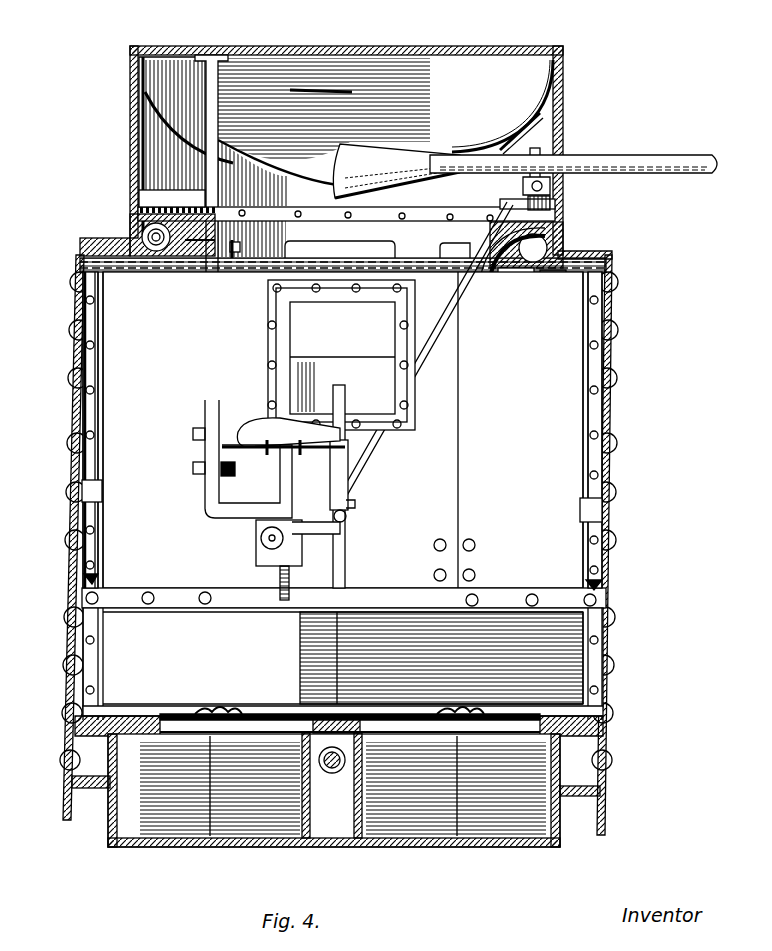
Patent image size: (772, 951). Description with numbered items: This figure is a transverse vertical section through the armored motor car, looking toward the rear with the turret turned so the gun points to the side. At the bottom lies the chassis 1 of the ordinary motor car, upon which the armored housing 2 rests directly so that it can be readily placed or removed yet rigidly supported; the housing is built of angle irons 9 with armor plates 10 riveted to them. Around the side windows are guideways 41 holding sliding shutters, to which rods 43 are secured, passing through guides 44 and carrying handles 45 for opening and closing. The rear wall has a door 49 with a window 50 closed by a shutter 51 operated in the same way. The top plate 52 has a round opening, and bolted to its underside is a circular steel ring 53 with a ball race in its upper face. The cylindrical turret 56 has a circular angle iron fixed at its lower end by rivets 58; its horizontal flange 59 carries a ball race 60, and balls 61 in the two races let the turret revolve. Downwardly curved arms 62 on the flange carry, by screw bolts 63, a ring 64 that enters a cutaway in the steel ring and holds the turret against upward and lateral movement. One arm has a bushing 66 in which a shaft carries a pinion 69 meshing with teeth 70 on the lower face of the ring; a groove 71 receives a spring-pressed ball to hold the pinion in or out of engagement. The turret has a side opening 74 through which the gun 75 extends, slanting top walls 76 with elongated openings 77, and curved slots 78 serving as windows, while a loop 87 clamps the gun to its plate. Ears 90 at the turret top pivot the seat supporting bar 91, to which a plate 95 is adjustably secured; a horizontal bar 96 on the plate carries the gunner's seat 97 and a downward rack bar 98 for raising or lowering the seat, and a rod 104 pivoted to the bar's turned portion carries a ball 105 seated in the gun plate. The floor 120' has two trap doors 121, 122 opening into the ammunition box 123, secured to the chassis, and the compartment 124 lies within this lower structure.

The chassis 1 is at (97, 784).
The armored housing 2 is at (70, 535).
The angle irons 9 is at (614, 262).
The armor plates 10 is at (614, 380).
The guideways 41 is at (104, 335).
The rods 43 is at (104, 378).
The guides 44 is at (104, 486).
The handles 45 is at (98, 577).
The door 49 is at (344, 440).
The window 50 is at (341, 355).
The shutter 51 is at (342, 384).
The top plate 52 is at (140, 242).
The circular steel ring 53 is at (84, 290).
The turret 56 is at (466, 56).
The rivets 58 is at (140, 208).
The horizontal flange 59 is at (140, 186).
The ball race 60 is at (140, 216).
The balls 61 is at (160, 262).
The downwardly curved arms 62 is at (556, 206).
The screw bolts 63 is at (195, 262).
The ring 64 is at (440, 288).
The bushing 66 is at (506, 305).
The pinion 69 is at (552, 302).
The teeth 70 is at (258, 275).
The groove 71 is at (526, 300).
The opening 74 is at (560, 150).
The gun 75 is at (598, 158).
The slanting walls 76 is at (505, 92).
The elongated openings 77 is at (415, 93).
The curved slots 78 is at (560, 110).
The loop 87 is at (538, 160).
The ears 90 is at (225, 55).
The seat supporting bar 91 is at (160, 97).
The plate 95 is at (210, 470).
The horizontal bar 96 is at (258, 450).
The seat 97 is at (245, 422).
The rack bar 98 is at (282, 568).
The rod 104 is at (475, 237).
The ball 105 is at (540, 205).
The floor 120' is at (339, 699).
The trap door 121 is at (185, 714).
The trap door 122 is at (433, 712).
The ammunition box 123 is at (182, 836).
The compartment 124 is at (290, 712).